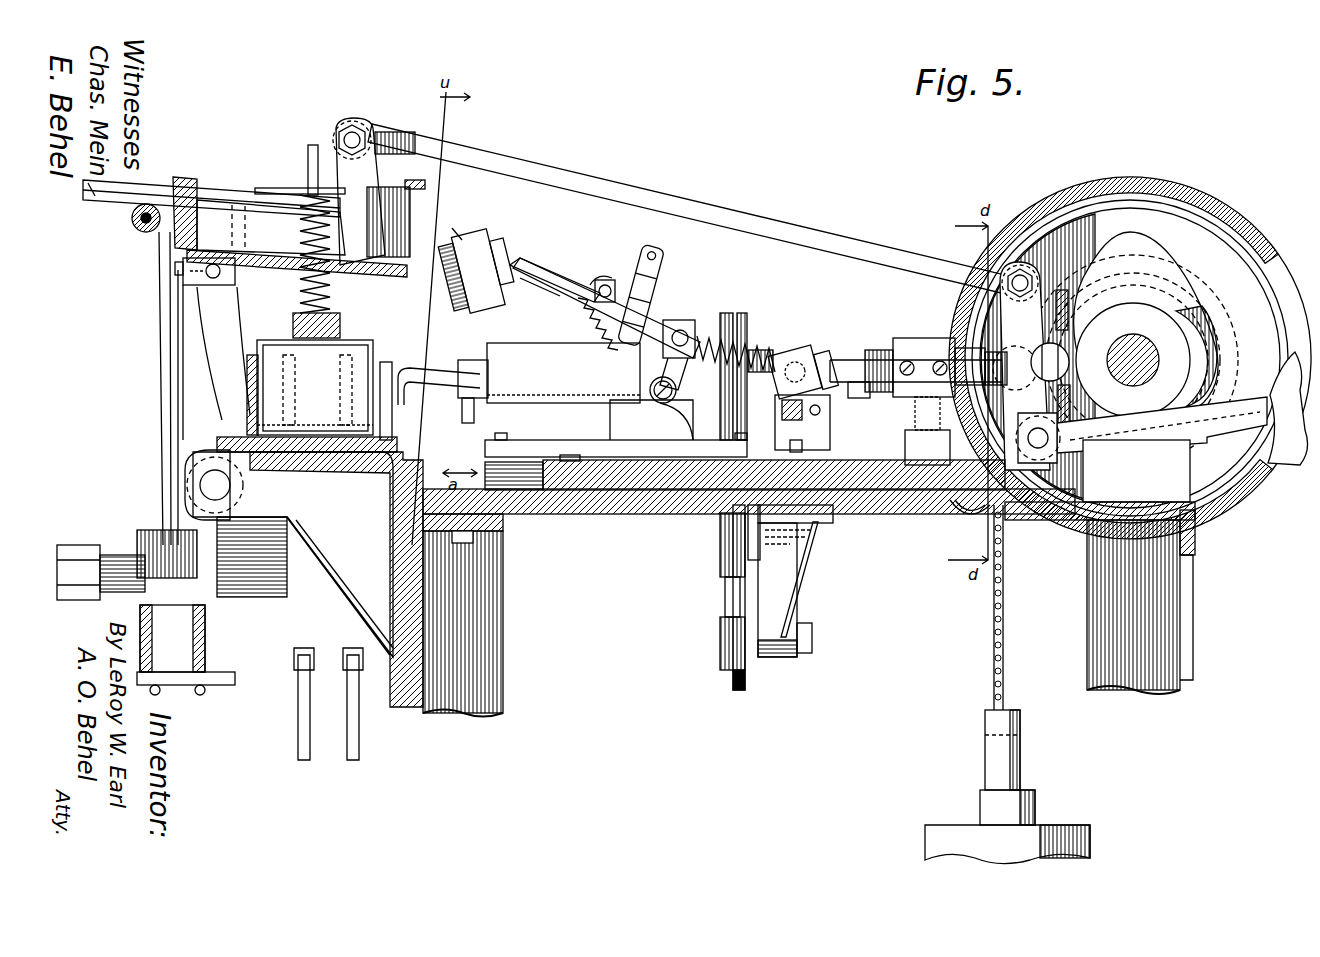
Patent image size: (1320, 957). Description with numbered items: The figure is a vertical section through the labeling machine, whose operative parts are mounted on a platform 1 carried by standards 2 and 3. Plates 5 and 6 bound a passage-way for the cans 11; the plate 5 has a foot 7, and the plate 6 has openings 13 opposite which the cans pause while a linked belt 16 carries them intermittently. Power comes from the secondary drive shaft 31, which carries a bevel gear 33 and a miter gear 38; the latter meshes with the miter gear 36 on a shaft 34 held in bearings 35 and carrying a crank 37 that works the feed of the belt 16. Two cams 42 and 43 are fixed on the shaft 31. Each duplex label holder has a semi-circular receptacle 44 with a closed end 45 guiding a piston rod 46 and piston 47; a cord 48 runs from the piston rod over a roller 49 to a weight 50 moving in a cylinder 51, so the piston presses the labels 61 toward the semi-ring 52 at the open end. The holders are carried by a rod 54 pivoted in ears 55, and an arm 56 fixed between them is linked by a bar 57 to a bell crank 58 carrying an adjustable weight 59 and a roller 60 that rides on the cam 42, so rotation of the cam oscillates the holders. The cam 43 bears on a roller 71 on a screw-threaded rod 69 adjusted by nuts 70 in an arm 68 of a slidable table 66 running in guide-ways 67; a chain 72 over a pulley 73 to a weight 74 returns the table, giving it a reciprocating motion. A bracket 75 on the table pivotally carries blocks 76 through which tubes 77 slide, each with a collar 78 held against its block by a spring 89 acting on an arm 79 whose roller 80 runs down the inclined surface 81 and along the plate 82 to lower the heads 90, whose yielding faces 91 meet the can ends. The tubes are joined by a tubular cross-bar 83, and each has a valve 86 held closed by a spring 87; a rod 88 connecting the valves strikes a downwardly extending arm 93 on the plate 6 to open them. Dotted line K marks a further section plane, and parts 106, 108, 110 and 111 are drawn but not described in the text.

The platform 1 is at (590, 500).
The standard 2 is at (500, 608).
The standard 3 is at (1087, 596).
The plate 5 is at (247, 382).
The plate 6 is at (396, 442).
The foot 7 is at (262, 460).
The cans 11 is at (315, 387).
The openings 13 is at (389, 365).
The linked belt 16 is at (293, 554).
The secondary drive shaft 31 is at (1130, 345).
The bevel gear 33 is at (1115, 182).
The shaft 34 is at (850, 358).
The bearings 35 is at (563, 373).
The miter gear 36 is at (1038, 364).
The crank 37 is at (470, 377).
The miter gear 38 is at (1054, 438).
The cam 42 is at (1198, 325).
The cam 43 is at (1146, 327).
The semi-circular receptacle 44 is at (186, 196).
The closed end 45 is at (271, 227).
The piston rod 46 is at (215, 198).
The piston 47 is at (375, 188).
The cord 48 is at (165, 275).
The roller 49 is at (132, 221).
The weight 50 is at (186, 612).
The cylinder 51 is at (146, 637).
The semi-ring 52 is at (425, 185).
The rod 54 is at (203, 313).
The ears 55 is at (215, 484).
The arm 56 is at (352, 133).
The bar 57 is at (618, 196).
The bell crank 58 is at (412, 258).
The weight 59 is at (1282, 362).
The roller 60 is at (1040, 326).
The labels 61 is at (409, 201).
The slidable table 66 is at (674, 485).
The guide-ways 67 is at (536, 492).
The arm 68 is at (911, 408).
The screw-threaded rod 69 is at (856, 384).
The nuts 70 is at (878, 350).
The roller 71 is at (1048, 372).
The chain 72 is at (995, 583).
The pulley 73 is at (969, 520).
The weight 74 is at (1058, 825).
The bracket 75 is at (812, 400).
The blocks 76 is at (797, 350).
The tube 77 is at (765, 355).
The collar 78 is at (826, 352).
The arm 79 is at (678, 346).
The roller 80 is at (656, 397).
The inclined surface 81 is at (651, 420).
The plate 82 is at (616, 447).
The tubular cross-bar 83 is at (636, 310).
The valve 86 is at (552, 285).
The spring 87 is at (592, 322).
The rod 88 is at (592, 283).
The spring 89 is at (708, 335).
The head 90 is at (480, 233).
The yielding face 91 is at (457, 223).
The downwardly extending arm 93 is at (442, 368).
The bracket 106 is at (798, 581).
The pulley 108 is at (726, 612).
The disk 110 is at (745, 330).
The pulley end 111 is at (752, 690).
The dotted section line K is at (451, 277).